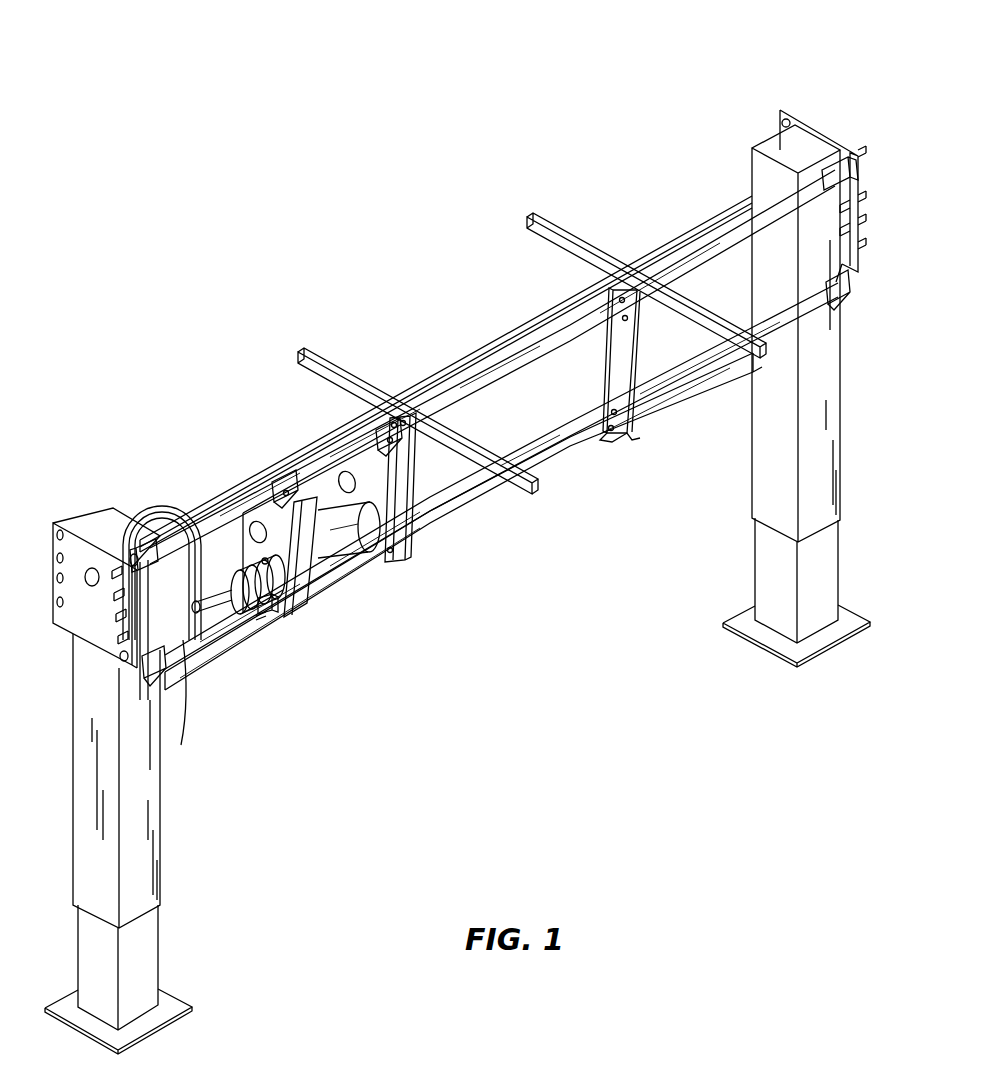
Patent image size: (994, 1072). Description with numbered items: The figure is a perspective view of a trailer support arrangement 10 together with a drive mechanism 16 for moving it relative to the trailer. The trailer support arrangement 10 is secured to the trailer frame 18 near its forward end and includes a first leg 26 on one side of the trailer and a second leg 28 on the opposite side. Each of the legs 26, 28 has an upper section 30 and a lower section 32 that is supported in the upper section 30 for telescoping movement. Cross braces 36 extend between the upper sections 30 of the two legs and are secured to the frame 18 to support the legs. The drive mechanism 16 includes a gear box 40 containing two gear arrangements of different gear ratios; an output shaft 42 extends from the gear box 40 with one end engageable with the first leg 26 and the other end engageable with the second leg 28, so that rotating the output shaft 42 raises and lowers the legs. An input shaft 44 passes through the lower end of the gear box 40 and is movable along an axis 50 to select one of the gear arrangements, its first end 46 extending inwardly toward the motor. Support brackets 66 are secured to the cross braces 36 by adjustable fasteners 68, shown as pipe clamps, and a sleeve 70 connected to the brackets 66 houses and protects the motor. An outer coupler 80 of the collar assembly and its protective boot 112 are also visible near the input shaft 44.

The trailer support arrangement 10 is at (621, 74).
The drive mechanism 16 is at (294, 748).
The frame 18 is at (560, 218).
The first leg 26 is at (60, 823).
The second leg 28 is at (856, 448).
The upper section 30 is at (150, 843).
The lower section 32 is at (158, 938).
The cross braces 36 is at (500, 365).
The gear box 40 is at (162, 506).
The output shaft 42 is at (440, 362).
The input shaft 44 is at (180, 655).
The first end 46 is at (238, 612).
The axis 50 is at (118, 655).
The support brackets 66 is at (302, 606).
The adjustable fasteners 68 is at (834, 168).
The sleeve 70 is at (345, 556).
The outer coupler 80 is at (270, 610).
The boot 112 is at (260, 622).